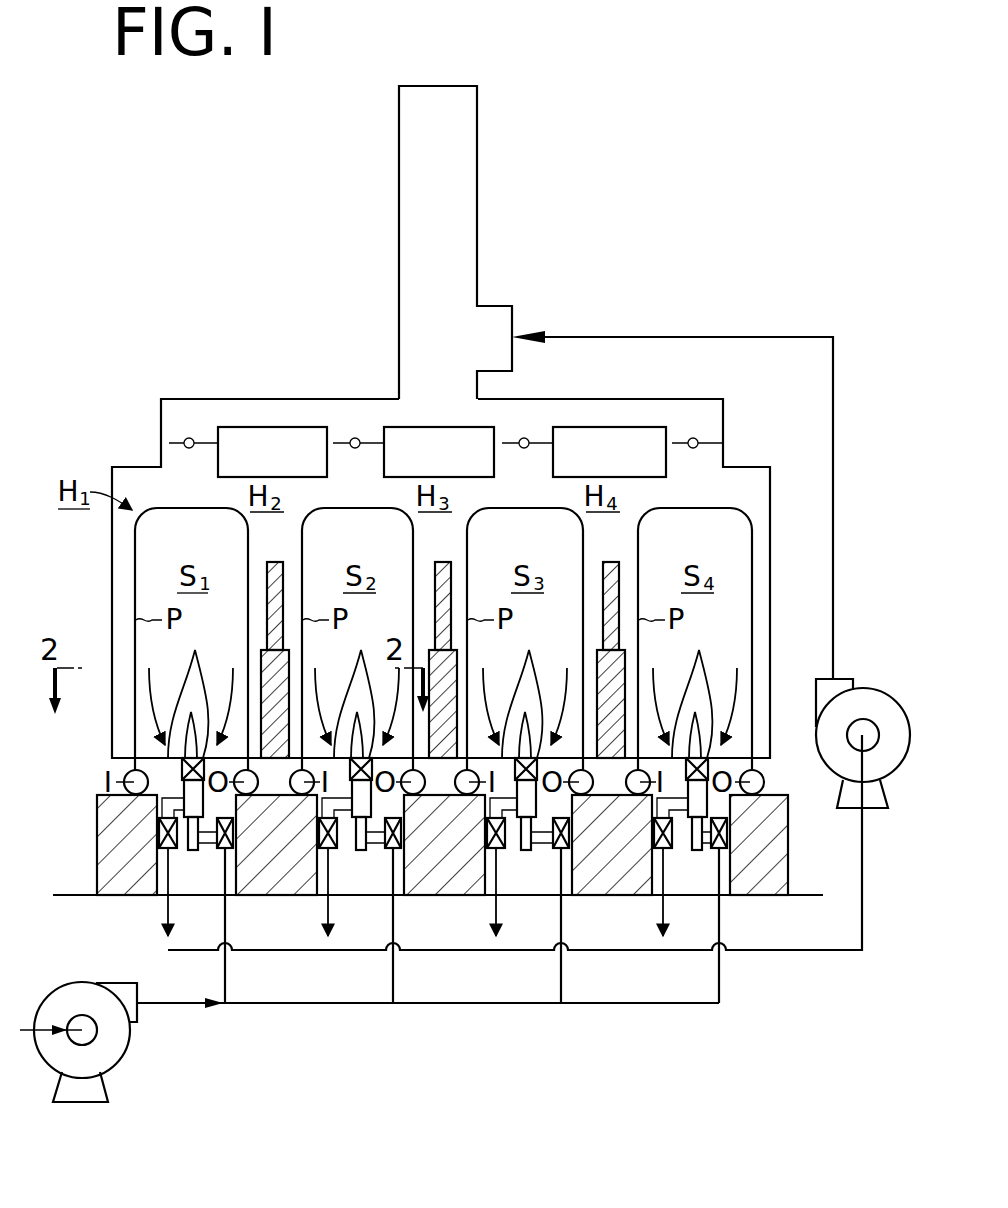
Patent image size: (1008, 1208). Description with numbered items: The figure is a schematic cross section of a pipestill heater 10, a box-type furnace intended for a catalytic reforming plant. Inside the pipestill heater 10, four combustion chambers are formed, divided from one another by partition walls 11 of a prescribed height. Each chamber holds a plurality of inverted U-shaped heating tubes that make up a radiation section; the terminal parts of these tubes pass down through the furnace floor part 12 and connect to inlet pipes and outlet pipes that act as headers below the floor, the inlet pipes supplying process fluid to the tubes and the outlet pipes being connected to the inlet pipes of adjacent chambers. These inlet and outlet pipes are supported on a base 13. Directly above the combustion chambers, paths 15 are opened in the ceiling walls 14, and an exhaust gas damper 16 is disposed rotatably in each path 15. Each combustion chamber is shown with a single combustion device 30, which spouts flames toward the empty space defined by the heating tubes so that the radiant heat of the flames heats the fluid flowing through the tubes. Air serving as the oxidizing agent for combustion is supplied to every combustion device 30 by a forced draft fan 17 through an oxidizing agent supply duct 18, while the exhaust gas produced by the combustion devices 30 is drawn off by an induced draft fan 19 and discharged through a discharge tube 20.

The pipestill heater 10 is at (172, 277).
The partition walls 11 is at (275, 562).
The furnace floor part 12 is at (152, 758).
The base 13 is at (97, 840).
The ceiling walls 14 is at (258, 468).
The paths 15 is at (199, 434).
The exhaust gas damper 16 is at (187, 452).
The forced draft fan 17 is at (108, 1055).
The oxidizing agent supply duct 18 is at (320, 1005).
The induced draft fan 19 is at (877, 693).
The discharge tube 20 is at (480, 203).
The combustion device 30 is at (196, 863).